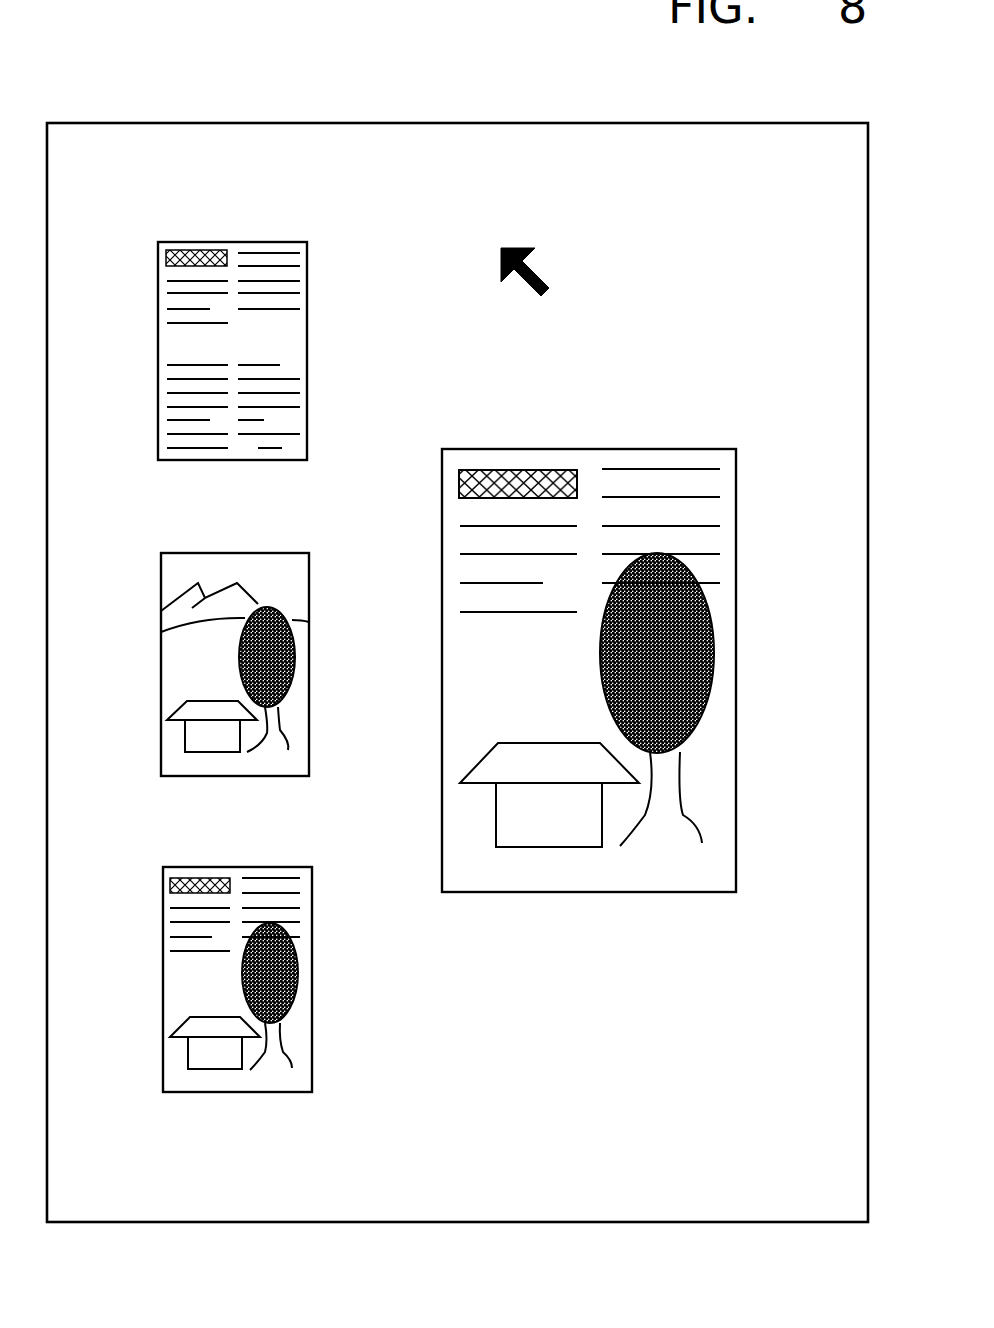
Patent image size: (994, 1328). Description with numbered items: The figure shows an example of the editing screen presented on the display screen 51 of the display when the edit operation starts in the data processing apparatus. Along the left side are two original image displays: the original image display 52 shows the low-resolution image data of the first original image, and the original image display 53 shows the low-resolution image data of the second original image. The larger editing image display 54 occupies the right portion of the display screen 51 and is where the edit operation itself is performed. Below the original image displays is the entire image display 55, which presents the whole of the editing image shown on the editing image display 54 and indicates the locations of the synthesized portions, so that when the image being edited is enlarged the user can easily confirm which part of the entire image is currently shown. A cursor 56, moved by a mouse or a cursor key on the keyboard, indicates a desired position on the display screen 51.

The display screen 51 is at (698, 122).
The original image display 52 is at (307, 328).
The original image display 53 is at (310, 628).
The editing image display 54 is at (643, 452).
The entire image display 55 is at (312, 960).
The cursor 56 is at (547, 278).